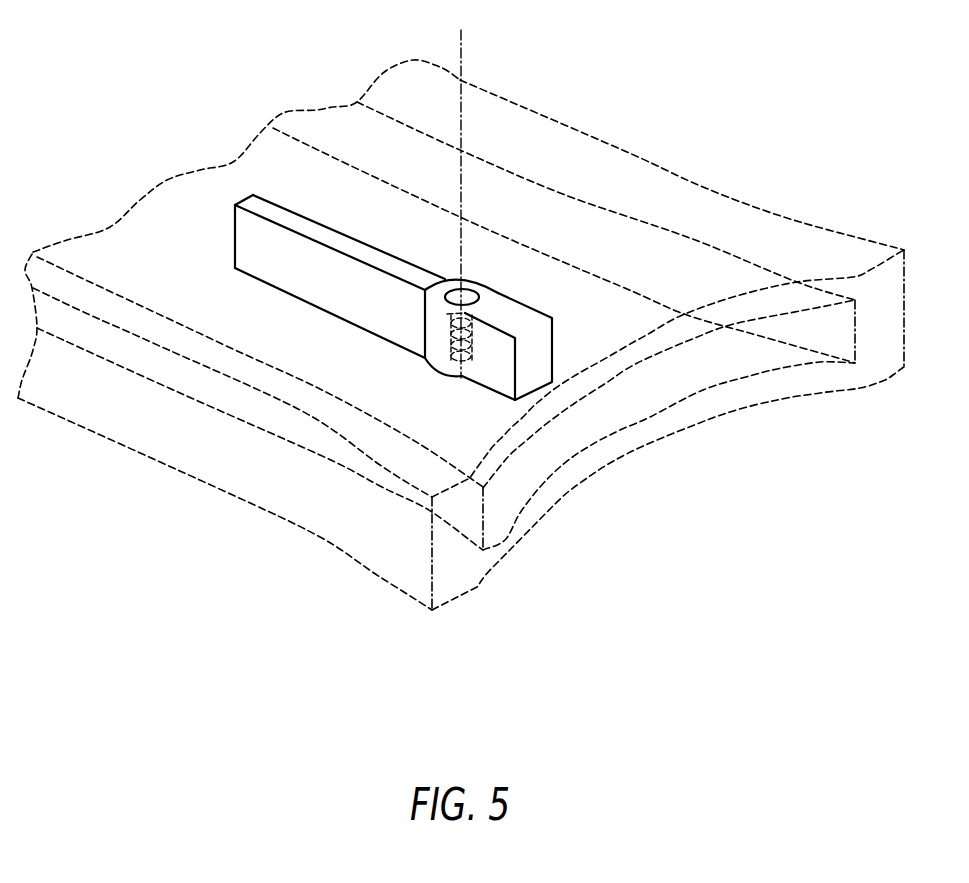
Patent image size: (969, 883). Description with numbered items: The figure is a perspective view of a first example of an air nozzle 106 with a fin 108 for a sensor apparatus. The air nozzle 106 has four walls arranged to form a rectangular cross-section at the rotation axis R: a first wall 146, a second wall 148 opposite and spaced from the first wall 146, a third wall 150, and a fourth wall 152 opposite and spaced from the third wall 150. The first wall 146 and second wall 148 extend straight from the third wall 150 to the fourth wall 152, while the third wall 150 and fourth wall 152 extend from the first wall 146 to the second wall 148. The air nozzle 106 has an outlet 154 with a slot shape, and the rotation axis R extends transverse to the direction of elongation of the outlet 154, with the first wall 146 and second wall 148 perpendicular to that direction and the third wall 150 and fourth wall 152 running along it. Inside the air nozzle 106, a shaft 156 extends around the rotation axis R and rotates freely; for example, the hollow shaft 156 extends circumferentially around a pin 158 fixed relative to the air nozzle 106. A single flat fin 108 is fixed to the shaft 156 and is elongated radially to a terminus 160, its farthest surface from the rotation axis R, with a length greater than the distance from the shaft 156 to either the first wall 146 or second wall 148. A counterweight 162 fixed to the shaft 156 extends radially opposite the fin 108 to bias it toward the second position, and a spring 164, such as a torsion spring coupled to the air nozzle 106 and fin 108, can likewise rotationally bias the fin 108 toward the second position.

The air nozzle 106 is at (461, 313).
The fin 108 is at (352, 256).
The first wall 146 is at (288, 467).
The second wall 148 is at (707, 187).
The third wall 150 is at (525, 273).
The fourth wall 152 is at (580, 430).
The outlet 154 is at (743, 393).
The shaft 156 is at (435, 381).
The pin 158 is at (460, 292).
The terminus 160 is at (235, 230).
The counterweight 162 is at (535, 343).
The spring 164 is at (472, 337).
The rotation axis R is at (461, 191).